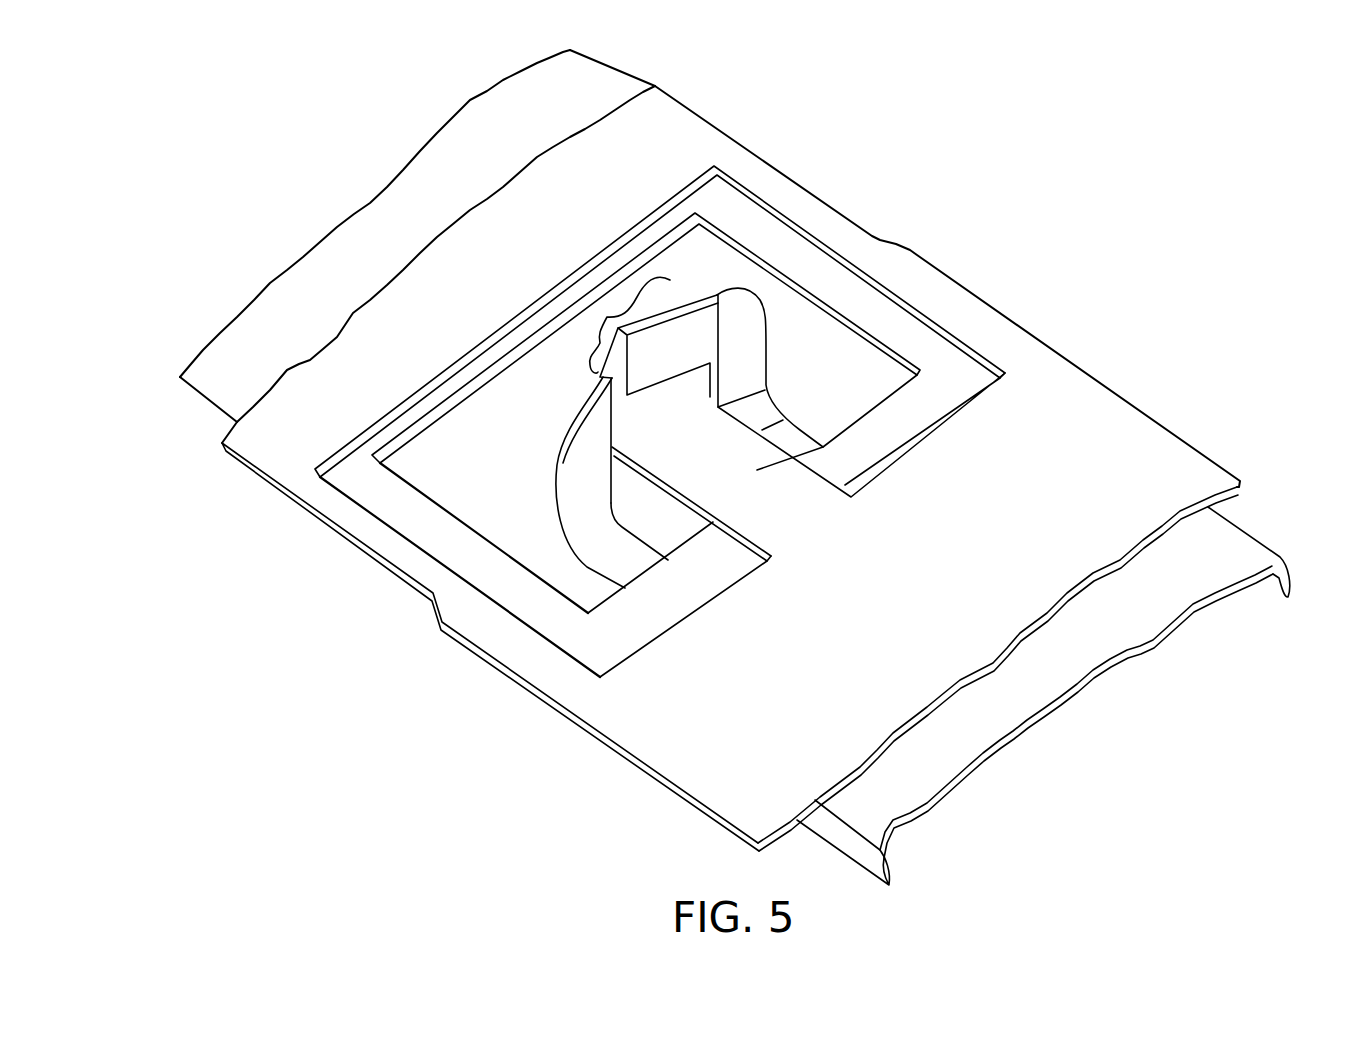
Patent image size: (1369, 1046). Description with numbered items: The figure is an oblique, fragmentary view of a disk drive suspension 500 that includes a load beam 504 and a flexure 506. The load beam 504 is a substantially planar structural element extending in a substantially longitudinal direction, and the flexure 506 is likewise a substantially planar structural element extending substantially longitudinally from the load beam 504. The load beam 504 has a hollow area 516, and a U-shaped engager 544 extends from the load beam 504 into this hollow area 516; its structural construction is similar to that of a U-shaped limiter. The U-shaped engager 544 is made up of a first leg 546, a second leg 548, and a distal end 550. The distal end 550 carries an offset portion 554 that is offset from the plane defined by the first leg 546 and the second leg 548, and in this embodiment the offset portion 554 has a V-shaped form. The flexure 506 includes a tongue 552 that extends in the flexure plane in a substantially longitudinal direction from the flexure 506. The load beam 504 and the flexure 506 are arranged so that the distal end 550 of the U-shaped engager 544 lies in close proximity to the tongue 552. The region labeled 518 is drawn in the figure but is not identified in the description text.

The disk drive suspension 500 is at (224, 714).
The load beam 504 is at (1228, 550).
The flexure 506 is at (1097, 400).
The hollow area 516 is at (683, 265).
The aperture 518 is at (510, 437).
The U-shaped engager 544 is at (565, 435).
The first leg 546 is at (590, 530).
The second leg 548 is at (737, 373).
The distal end 550 is at (670, 333).
The tongue 552 is at (733, 487).
The offset portion 554 is at (603, 313).